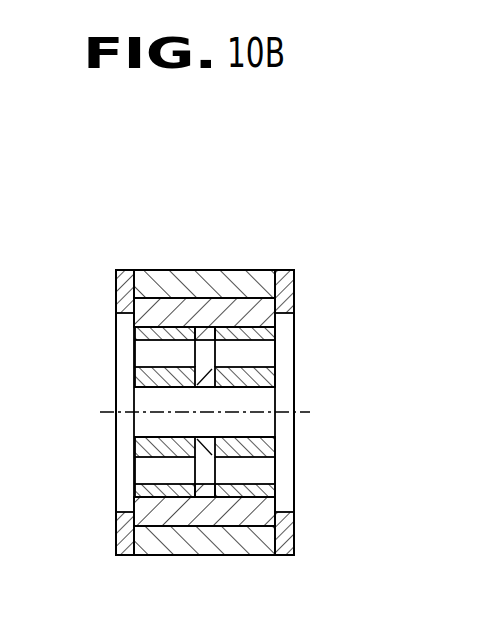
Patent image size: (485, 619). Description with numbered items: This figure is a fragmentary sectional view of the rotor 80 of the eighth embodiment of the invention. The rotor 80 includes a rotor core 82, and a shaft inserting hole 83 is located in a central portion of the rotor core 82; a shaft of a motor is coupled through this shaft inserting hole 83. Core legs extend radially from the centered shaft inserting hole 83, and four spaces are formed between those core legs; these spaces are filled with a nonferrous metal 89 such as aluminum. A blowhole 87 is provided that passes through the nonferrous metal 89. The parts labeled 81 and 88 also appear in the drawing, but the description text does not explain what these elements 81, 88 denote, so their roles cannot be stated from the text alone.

The rotor 80 is at (295, 252).
The end cap / side plate 81 is at (117, 296).
The rotor core 82 is at (260, 315).
The shaft inserting hole 83 is at (238, 390).
The blowhole 87 is at (257, 367).
The bearing 88 is at (193, 348).
The nonferrous metal 89 is at (265, 493).